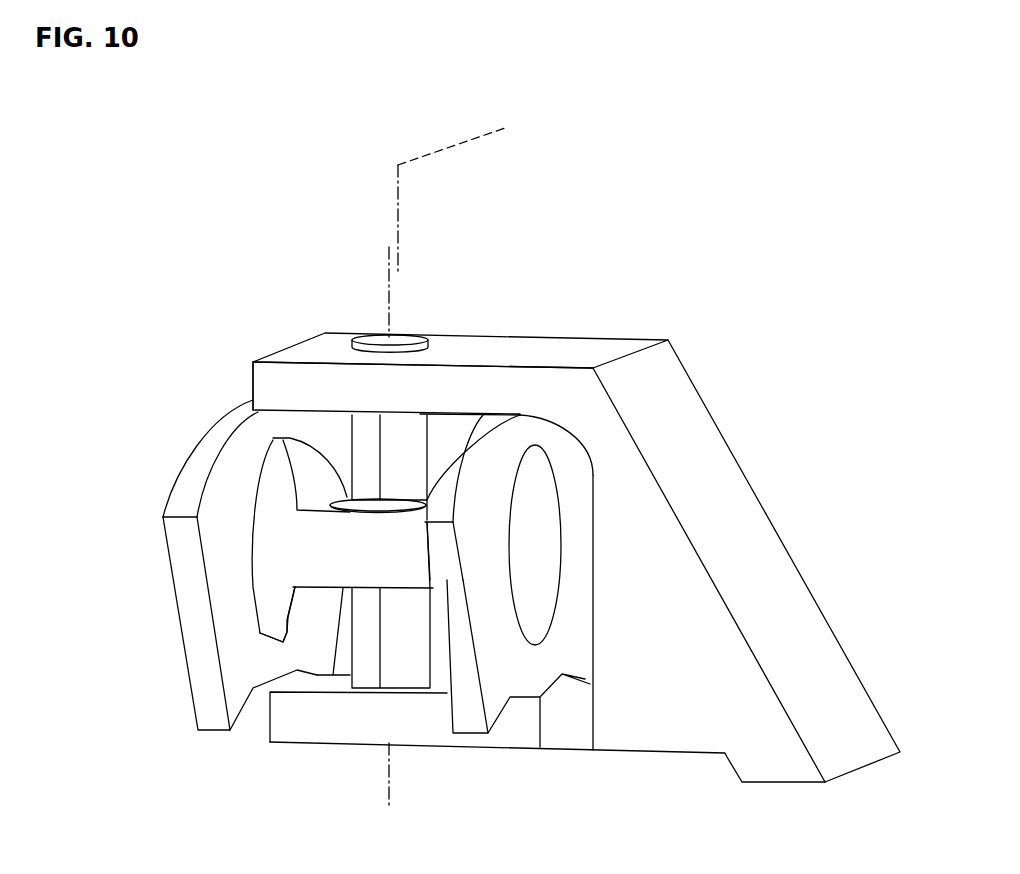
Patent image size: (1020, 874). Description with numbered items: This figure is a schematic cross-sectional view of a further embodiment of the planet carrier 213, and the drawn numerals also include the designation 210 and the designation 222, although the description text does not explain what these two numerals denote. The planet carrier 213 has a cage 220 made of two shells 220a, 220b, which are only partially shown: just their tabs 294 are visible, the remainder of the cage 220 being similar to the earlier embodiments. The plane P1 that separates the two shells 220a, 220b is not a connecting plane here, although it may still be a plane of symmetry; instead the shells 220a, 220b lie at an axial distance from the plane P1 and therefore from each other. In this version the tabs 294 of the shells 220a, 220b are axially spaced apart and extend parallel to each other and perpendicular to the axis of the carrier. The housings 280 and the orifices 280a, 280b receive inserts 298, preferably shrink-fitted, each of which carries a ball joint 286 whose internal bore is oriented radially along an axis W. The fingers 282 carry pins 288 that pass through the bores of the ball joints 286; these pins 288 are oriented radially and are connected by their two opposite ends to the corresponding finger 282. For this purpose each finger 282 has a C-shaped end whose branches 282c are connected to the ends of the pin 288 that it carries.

The securing device 210 is at (539, 557).
The planet carrier 213 is at (762, 282).
The cage 220 is at (348, 547).
The first shell 220a is at (213, 728).
The second shell 220b is at (467, 724).
The sloped plate surface 222 is at (826, 578).
The housings 280 is at (358, 642).
The first orifice 280a is at (256, 584).
The second orifice 280b is at (517, 612).
The finger 282 is at (740, 488).
The branches 282c is at (308, 375).
The ball joint 286 is at (350, 505).
The pin 288 is at (413, 443).
The tabs 294 is at (182, 488).
The insert 298 is at (305, 612).
The plane P1 is at (410, 188).
The axis W is at (389, 313).